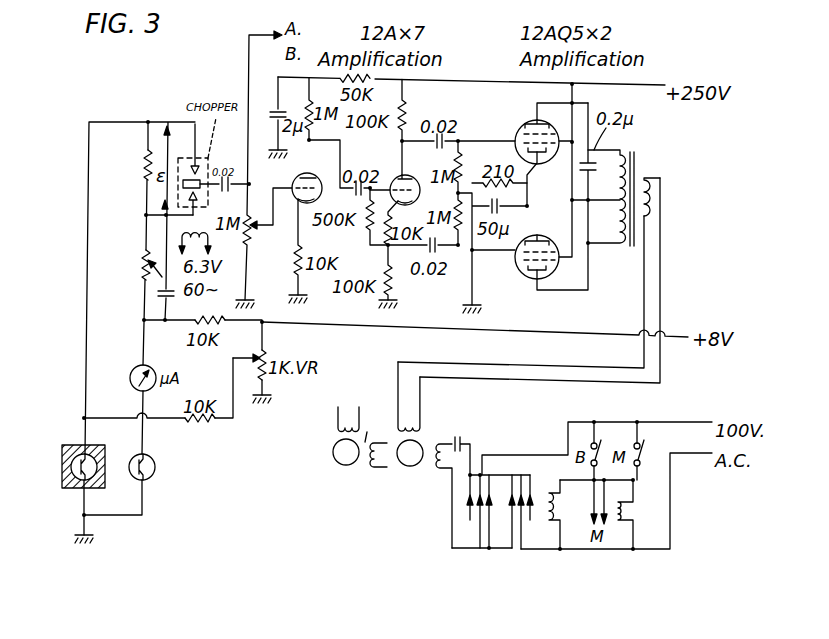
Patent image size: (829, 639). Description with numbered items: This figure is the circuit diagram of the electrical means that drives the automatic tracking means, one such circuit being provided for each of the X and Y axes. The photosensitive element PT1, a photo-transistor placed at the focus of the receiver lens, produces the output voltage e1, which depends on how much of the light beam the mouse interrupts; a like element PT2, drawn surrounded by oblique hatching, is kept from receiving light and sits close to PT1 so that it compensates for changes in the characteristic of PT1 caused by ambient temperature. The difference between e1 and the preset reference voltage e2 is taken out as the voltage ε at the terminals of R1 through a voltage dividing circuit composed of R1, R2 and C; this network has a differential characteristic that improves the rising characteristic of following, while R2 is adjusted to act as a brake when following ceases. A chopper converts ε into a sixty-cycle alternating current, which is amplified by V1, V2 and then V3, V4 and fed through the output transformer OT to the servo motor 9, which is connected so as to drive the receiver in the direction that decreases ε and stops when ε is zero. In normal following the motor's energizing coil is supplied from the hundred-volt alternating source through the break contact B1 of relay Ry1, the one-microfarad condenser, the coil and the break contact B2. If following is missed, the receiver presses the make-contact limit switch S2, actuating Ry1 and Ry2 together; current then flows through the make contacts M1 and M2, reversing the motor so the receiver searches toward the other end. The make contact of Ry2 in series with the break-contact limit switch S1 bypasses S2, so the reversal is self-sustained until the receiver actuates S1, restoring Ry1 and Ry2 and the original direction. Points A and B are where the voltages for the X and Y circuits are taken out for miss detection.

The servo motor 9 is at (403, 553).
The resistor R1 is at (122, 172).
The resistor R2 is at (127, 257).
The condenser C is at (196, 300).
The amplifier tube V1 is at (312, 177).
The amplifier tube V2 is at (408, 180).
The amplifier tube V3 is at (532, 136).
The amplifier tube V4 is at (537, 248).
The photosensitive element PT1 is at (172, 485).
The photosensitive element PT2 is at (52, 481).
The output transformer OT is at (624, 187).
The break contact B1 is at (470, 522).
The make contact M1 is at (489, 535).
The break contact B2 is at (513, 492).
The make contact M2 is at (529, 492).
The limit switch S1 is at (593, 442).
The limit switch S2 is at (636, 442).
The relay Ry1 is at (568, 514).
The relay Ry2 is at (640, 514).
The output voltage e1 is at (141, 324).
The reference voltage e2 is at (147, 119).